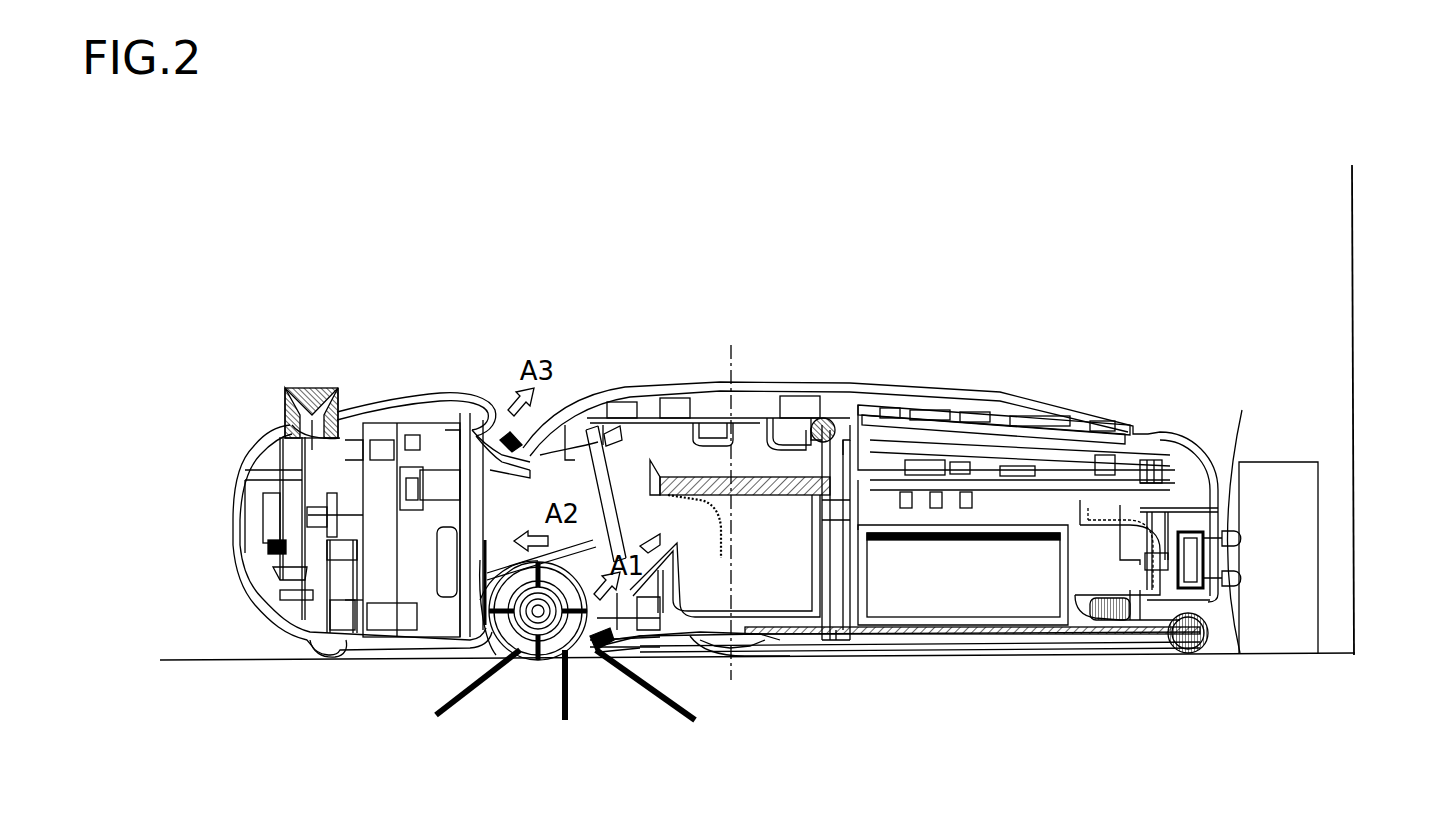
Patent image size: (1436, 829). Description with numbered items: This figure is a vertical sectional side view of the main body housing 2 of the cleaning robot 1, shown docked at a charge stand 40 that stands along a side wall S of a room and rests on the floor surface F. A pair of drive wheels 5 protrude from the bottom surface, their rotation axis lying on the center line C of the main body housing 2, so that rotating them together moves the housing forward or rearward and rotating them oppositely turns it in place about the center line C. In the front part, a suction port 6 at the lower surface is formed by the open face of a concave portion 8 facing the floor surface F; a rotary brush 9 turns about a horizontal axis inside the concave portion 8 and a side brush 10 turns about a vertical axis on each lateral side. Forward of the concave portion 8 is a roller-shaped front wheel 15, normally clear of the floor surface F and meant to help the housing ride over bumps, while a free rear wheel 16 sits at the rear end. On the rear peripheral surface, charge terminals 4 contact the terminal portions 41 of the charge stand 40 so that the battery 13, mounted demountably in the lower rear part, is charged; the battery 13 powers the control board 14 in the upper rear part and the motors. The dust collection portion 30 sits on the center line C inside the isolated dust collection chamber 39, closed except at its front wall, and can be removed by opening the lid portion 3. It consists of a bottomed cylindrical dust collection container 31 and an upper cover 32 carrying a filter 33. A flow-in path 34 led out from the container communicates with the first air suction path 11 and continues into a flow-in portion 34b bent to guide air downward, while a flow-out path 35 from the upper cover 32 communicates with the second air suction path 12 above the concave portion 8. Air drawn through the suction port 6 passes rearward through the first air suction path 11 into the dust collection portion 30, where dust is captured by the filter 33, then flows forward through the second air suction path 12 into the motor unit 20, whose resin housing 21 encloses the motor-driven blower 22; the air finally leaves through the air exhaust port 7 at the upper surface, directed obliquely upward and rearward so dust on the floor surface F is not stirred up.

The cleaning robot 1 is at (1146, 233).
The main body housing 2 is at (1183, 437).
The lid portion 3 is at (826, 388).
The charge terminals 4 is at (1242, 410).
The drive wheels 5 is at (763, 654).
The suction port 6 is at (578, 640).
The air exhaust port 7 is at (496, 418).
The concave portion 8 is at (494, 645).
The rotary brush 9 is at (516, 645).
The side brush 10 is at (680, 714).
The first air suction path 11 is at (610, 640).
The second air suction path 12 is at (566, 462).
The battery 13 is at (1002, 590).
The control board 14 is at (1078, 440).
The front wheel 15 is at (330, 645).
The rear wheel 16 is at (1180, 656).
The motor unit 20 is at (420, 638).
The housing 21 is at (437, 640).
The motor-driven blower 22 is at (398, 420).
The dust collection portion 30 is at (807, 634).
The dust collection container 31 is at (845, 632).
The upper cover 32 is at (780, 412).
The filter 33 is at (760, 495).
The flow-in path 34 is at (707, 655).
The flow-in portion 34b is at (720, 552).
The flow-out path 35 is at (624, 440).
The dust collection chamber 39 is at (840, 418).
The charge stand 40 is at (1297, 635).
The terminal portions 41 is at (1243, 578).
The center line C is at (729, 358).
The side wall S is at (1350, 262).
The floor surface F is at (196, 658).